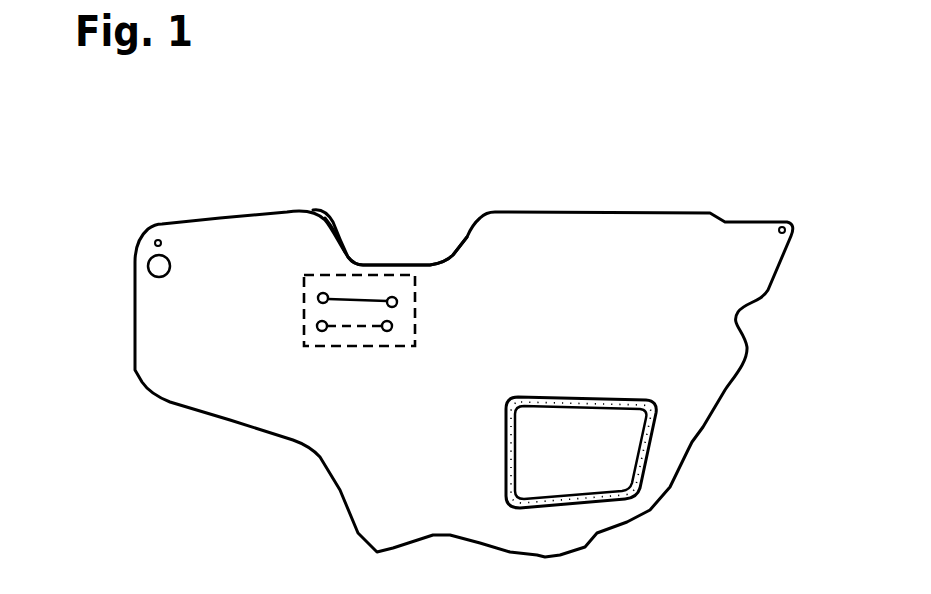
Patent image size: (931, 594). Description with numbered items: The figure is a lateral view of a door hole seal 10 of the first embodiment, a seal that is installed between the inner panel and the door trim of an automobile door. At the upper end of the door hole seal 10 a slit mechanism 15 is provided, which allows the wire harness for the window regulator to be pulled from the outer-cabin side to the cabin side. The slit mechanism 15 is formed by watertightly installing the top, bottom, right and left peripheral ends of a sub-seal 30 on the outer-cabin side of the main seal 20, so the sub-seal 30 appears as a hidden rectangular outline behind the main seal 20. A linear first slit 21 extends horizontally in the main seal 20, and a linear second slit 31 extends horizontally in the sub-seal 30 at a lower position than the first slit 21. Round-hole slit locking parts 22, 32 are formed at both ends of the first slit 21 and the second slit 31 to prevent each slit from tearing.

The door hole seal 10 is at (585, 197).
The slit mechanism 15 is at (318, 252).
The main seal 20 is at (338, 250).
The first slit 21 is at (373, 300).
The slit locking parts 22 is at (318, 298).
The sub-seal 30 is at (360, 290).
The second slit 31 is at (358, 330).
The slit locking parts 32 is at (305, 330).